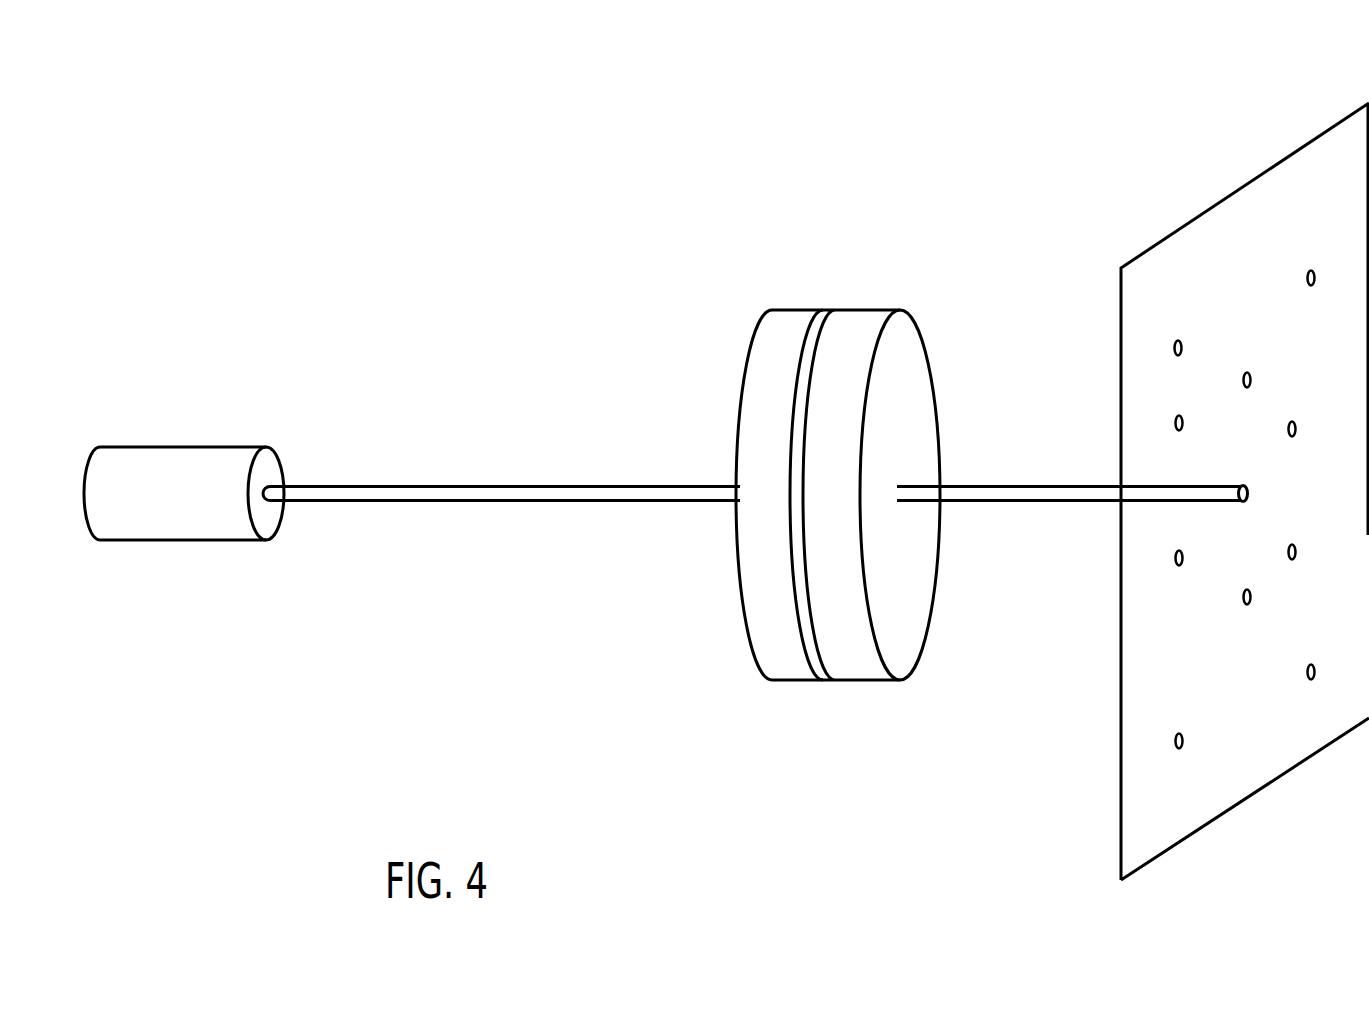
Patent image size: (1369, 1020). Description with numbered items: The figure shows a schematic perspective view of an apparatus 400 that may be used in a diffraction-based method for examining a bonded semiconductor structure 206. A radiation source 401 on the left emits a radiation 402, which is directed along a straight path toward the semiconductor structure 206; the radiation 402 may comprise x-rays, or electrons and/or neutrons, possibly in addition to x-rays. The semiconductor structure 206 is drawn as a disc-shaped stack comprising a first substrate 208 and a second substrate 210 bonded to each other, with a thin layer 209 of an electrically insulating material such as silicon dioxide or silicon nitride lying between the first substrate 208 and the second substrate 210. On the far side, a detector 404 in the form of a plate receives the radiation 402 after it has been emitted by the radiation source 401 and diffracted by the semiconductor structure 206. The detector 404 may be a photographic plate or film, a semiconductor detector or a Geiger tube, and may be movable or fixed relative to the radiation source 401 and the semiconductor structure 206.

The apparatus 400 is at (258, 128).
The radiation source 401 is at (153, 446).
The radiation 402 is at (475, 483).
The semiconductor structure 206 is at (828, 407).
The second substrate 210 is at (777, 307).
The layer of electrically insulating material 209 is at (833, 307).
The first substrate 208 is at (920, 322).
The detector 404 is at (1317, 266).